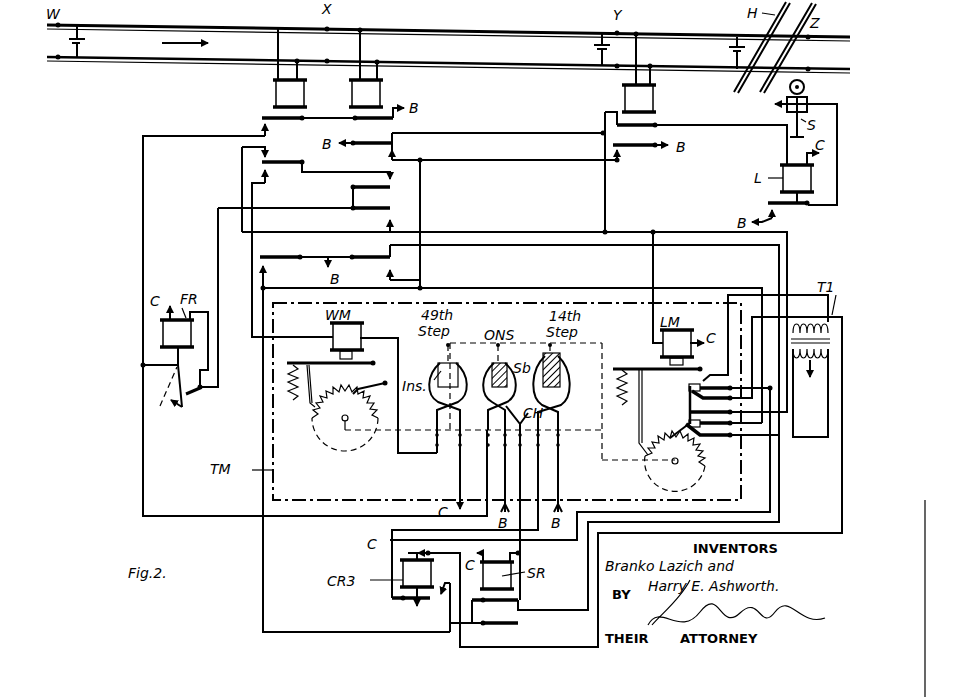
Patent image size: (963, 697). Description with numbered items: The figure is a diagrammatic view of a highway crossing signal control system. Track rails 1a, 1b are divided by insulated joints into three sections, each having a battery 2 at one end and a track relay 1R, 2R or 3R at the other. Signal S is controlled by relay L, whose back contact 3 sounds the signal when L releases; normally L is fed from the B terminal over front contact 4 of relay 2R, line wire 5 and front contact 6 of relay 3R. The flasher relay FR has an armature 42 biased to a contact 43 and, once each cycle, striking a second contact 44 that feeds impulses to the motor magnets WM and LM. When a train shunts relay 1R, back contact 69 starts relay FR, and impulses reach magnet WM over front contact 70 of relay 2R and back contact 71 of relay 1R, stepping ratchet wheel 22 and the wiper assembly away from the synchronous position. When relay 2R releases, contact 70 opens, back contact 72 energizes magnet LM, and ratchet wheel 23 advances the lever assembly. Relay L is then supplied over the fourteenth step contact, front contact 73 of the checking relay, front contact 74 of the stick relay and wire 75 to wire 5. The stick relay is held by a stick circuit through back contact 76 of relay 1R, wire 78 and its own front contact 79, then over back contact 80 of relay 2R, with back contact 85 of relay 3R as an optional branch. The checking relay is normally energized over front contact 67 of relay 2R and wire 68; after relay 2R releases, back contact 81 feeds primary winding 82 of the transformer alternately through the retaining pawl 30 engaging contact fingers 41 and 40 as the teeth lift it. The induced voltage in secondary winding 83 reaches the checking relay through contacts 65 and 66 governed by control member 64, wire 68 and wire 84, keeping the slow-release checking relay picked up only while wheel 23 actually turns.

The track rail 1a is at (238, 27).
The track rail 1b is at (238, 61).
The battery 2 is at (84, 41).
The back contact of relay L 3 is at (777, 215).
The front contact of relay 2R 4 is at (395, 144).
The line wire 5 is at (543, 133).
The front contact of relay 3R 6 is at (604, 116).
The track relay 1R is at (276, 97).
The track relay 2R is at (379, 97).
The track relay 3R is at (655, 101).
The ratchet wheel 22 is at (318, 442).
The ratchet wheel 23 is at (703, 483).
The retaining pawl 30 is at (689, 423).
The contact finger 40 is at (690, 413).
The contact finger 41 is at (706, 440).
The armature of relay FR 42 is at (182, 408).
The contact 43 is at (178, 402).
The second contact 44 is at (196, 393).
The control member 64 is at (689, 386).
The contact 65 is at (708, 375).
The contact 66 is at (690, 398).
The front contact of relay 2R 67 is at (387, 250).
The wire 68 is at (527, 246).
The back contact of relay 1R 69 is at (261, 125).
The front contact of relay 2R 70 is at (385, 186).
The back contact of relay 1R 71 is at (262, 174).
The back contact of relay 2R 72 is at (385, 224).
The front contact of relay CR3 73 is at (443, 602).
The front contact of relay SR 74 is at (521, 625).
The wire 75 is at (604, 222).
The back contact of relay 1R 76 is at (266, 270).
The wire 78 is at (260, 497).
The front contact of relay SR 79 is at (521, 601).
The back contact of relay 2R 80 is at (388, 158).
The back contact of relay 2R 81 is at (388, 272).
The primary winding 82 is at (824, 372).
The secondary winding 83 is at (809, 322).
The wire 84 is at (840, 474).
The back contact of relay 3R 85 is at (620, 158).